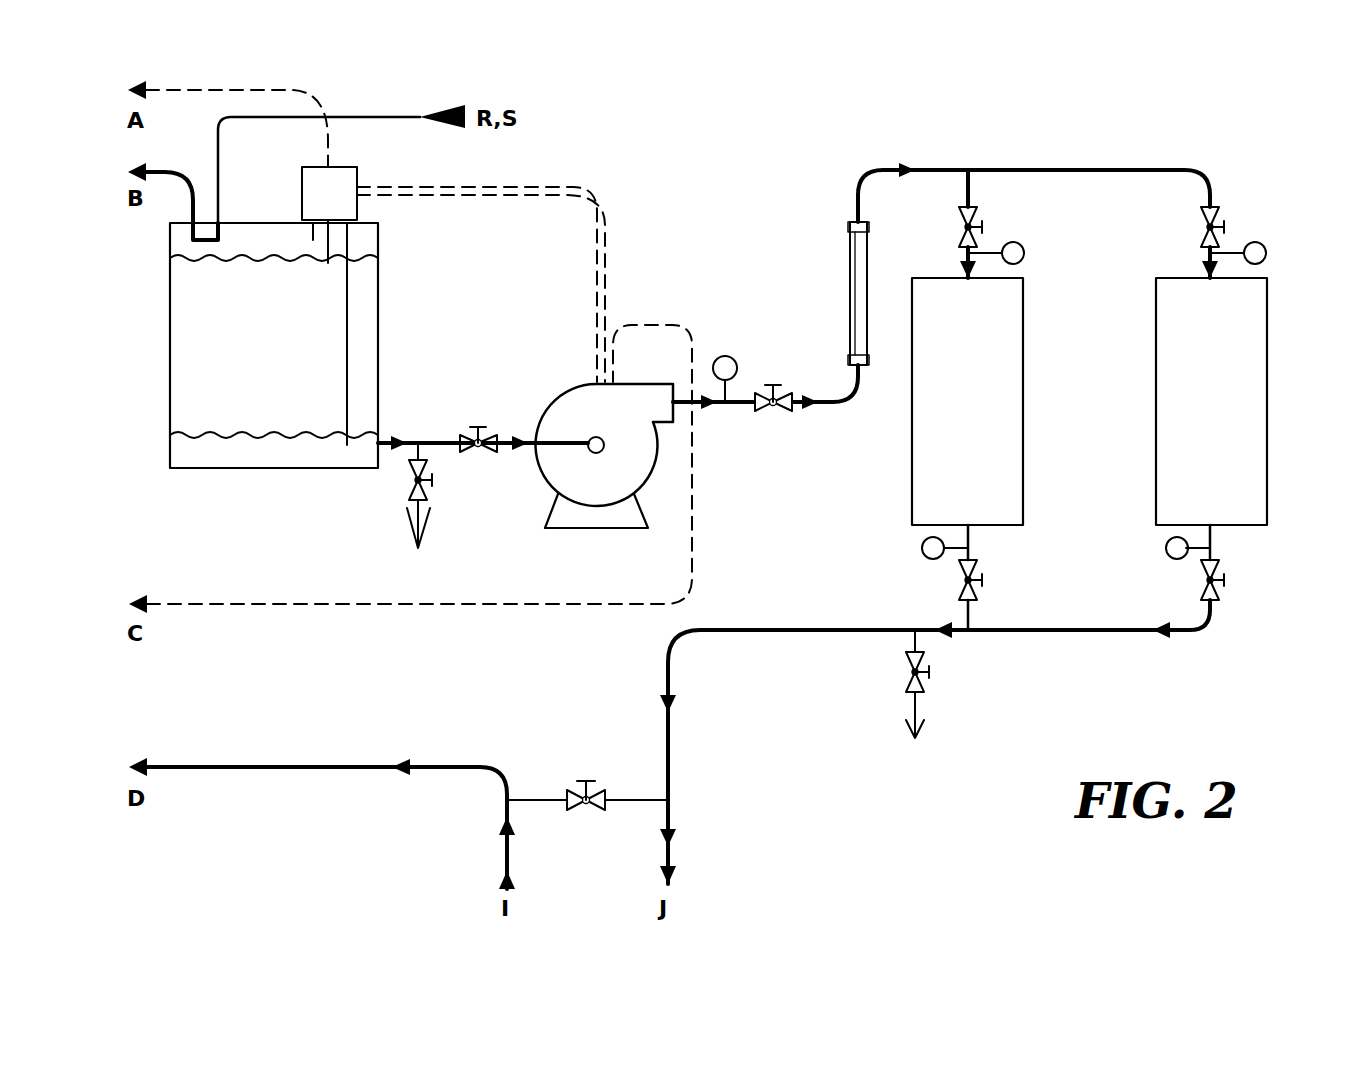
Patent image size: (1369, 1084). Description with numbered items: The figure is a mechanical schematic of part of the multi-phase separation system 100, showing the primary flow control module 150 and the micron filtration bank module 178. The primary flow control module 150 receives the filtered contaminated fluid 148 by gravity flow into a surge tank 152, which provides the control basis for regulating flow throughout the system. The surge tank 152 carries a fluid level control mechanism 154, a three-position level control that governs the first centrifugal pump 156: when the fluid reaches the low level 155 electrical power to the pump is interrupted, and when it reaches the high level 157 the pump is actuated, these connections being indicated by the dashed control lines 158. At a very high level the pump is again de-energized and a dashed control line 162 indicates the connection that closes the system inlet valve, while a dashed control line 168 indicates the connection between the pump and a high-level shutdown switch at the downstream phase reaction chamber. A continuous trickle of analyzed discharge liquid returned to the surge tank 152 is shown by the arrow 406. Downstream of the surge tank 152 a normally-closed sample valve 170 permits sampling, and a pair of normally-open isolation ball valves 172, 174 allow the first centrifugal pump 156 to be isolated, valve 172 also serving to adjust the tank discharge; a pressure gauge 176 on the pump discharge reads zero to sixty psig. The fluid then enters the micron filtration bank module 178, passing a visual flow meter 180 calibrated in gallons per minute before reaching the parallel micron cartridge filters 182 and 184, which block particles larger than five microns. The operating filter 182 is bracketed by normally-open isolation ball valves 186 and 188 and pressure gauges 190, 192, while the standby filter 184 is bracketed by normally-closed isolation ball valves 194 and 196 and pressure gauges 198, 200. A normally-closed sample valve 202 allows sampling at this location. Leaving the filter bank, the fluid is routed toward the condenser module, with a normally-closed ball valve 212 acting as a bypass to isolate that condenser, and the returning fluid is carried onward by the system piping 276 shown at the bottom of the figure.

The multi-phase separation system 100 is at (776, 115).
The filtered contaminated fluid 148 is at (162, 168).
The primary flow control module 150 is at (520, 168).
The surge tank 152 is at (187, 292).
The fluid level control mechanism 154 is at (357, 177).
The low fluid level 155 is at (207, 433).
The first centrifugal pump 156 is at (565, 403).
The high fluid level 157 is at (258, 255).
The control lines 158 is at (607, 265).
The control line 162 is at (248, 88).
The control line 168 is at (362, 607).
The sample valve 170 is at (410, 490).
The isolation ball valve 172 is at (487, 455).
The isolation ball valve 174 is at (780, 413).
The pressure gauge 176 is at (725, 356).
The micron filtration bank module 178 is at (1090, 155).
The visual flow meter 180 is at (850, 250).
The micron cartridge filter 182 is at (1025, 316).
The micron cartridge filter 184 is at (1270, 316).
The isolation ball valve 186 is at (958, 236).
The isolation ball valve 188 is at (980, 592).
The pressure gauge 190 is at (1020, 243).
The pressure gauge 192 is at (917, 552).
The isolation ball valve 194 is at (1200, 218).
The isolation ball valve 196 is at (1222, 592).
The pressure gauge 198 is at (1262, 243).
The pressure gauge 200 is at (1161, 552).
The sample valve 202 is at (905, 683).
The ball valve 212 is at (590, 813).
The system piping 276 is at (210, 765).
The arrow 406 is at (363, 116).